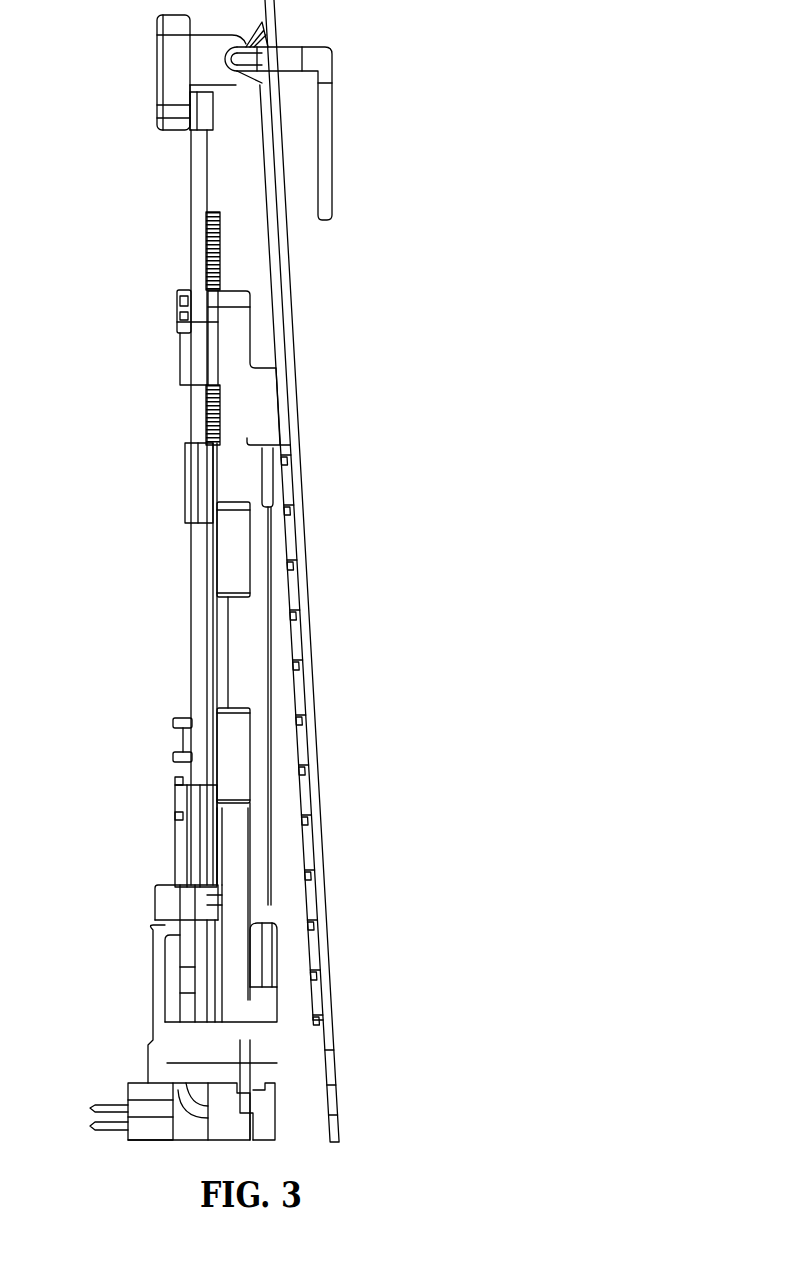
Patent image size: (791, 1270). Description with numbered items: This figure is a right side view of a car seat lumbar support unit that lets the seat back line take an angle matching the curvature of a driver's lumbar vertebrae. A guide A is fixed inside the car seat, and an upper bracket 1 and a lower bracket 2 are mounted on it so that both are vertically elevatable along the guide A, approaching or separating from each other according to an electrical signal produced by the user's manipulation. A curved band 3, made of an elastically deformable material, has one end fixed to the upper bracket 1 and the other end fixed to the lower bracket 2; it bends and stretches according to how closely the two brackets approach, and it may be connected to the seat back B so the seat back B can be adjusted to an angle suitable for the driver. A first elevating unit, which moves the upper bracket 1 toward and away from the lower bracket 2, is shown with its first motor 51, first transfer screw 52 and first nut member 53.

The guide A is at (197, 193).
The seat back B is at (288, 337).
The upper bracket 1 is at (255, 397).
The lower bracket 2 is at (255, 1027).
The curved band 3 is at (263, 640).
The first motor 51 is at (162, 897).
The first transfer screw 52 is at (213, 247).
The first nut member 53 is at (177, 307).